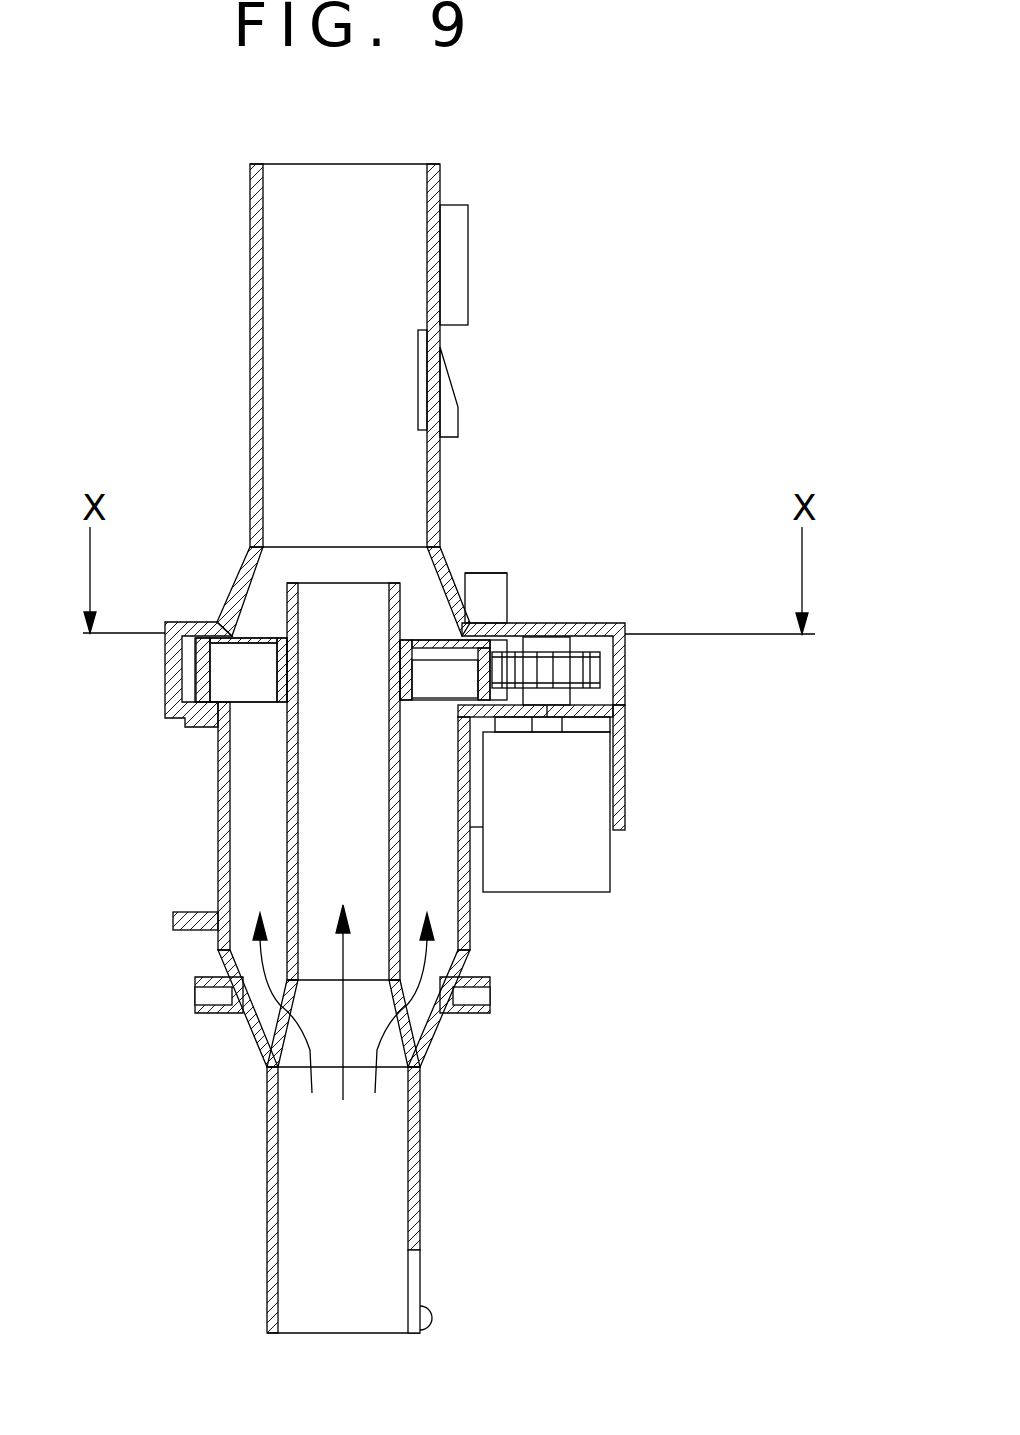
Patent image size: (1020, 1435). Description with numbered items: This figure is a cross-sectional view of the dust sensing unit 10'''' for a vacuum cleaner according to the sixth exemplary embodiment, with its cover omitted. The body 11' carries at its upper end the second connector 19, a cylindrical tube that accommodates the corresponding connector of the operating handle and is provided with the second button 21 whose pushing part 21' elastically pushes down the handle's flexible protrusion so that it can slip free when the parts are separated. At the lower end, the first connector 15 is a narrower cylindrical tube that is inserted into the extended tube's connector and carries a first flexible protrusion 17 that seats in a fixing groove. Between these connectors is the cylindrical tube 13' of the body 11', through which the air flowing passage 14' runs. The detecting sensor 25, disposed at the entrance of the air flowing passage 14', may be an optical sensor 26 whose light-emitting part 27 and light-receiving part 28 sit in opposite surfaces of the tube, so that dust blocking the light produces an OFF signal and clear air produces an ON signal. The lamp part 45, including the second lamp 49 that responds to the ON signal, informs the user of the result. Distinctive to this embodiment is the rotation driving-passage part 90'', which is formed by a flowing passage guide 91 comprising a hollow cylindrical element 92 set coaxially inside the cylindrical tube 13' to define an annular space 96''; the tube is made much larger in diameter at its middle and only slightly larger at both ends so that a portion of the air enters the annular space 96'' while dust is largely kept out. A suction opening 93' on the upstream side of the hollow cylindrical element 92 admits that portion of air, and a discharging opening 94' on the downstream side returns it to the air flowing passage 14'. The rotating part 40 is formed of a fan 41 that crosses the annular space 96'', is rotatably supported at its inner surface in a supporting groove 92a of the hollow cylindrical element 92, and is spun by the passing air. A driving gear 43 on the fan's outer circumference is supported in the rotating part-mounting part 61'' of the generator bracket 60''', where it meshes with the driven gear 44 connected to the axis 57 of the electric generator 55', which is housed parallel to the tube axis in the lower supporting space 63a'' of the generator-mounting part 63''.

The dust sensing unit 10'''' is at (422, 746).
The second connector 19 is at (250, 358).
The pushing part 21' is at (473, 282).
The second button 21 is at (494, 383).
The discharging opening 94' is at (221, 567).
The rotating part 40 is at (447, 550).
The body 11' is at (180, 628).
The supporting groove 92a is at (190, 727).
The hollow cylindrical element 92 is at (296, 758).
The flowing passage guide 91 is at (265, 805).
The rotation driving-passage part 90'' is at (272, 975).
The annular space 96'' is at (164, 935).
The suction opening 93' is at (185, 985).
The optical sensor 26 is at (158, 1100).
The light-receiving part 28 is at (210, 1013).
The light-emitting part 27 is at (390, 1003).
The detecting sensor 25 is at (520, 967).
The first connector 15 is at (273, 1183).
The air flowing passage 14' is at (438, 1049).
The first flexible protrusion 17 is at (433, 1315).
The cylindrical tube 13' is at (518, 833).
The generator bracket 60''' is at (610, 730).
The rotating part-mounting part 61'' is at (597, 664).
The generator-mounting part 63'' is at (596, 767).
The lower supporting space 63a'' is at (675, 818).
The electric generator 55' is at (607, 817).
The axis 57 is at (600, 640).
The driven gear 44 is at (627, 633).
The fan 41 is at (420, 628).
The second lamp 49 is at (513, 577).
The driving gear 43 is at (513, 617).
The lamp part 45 is at (502, 551).